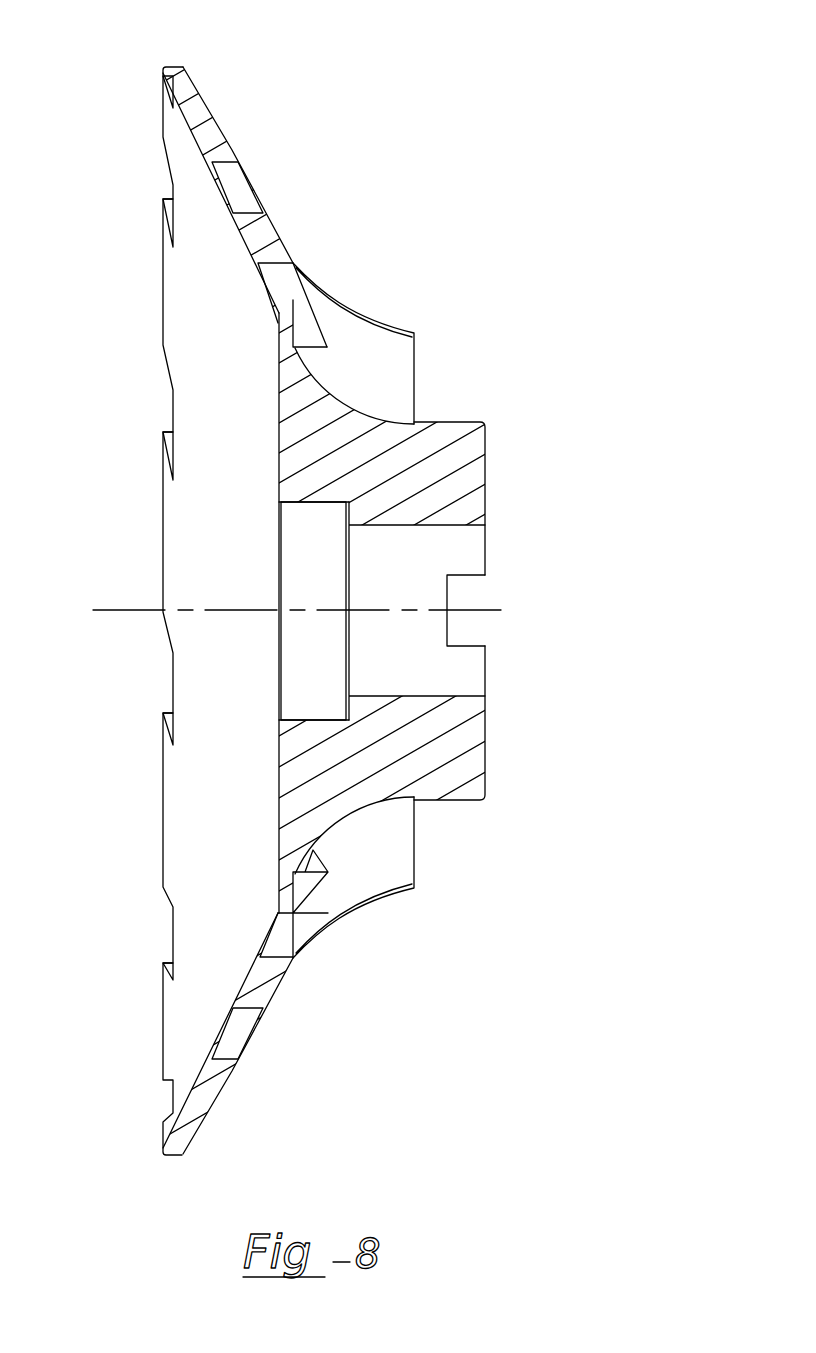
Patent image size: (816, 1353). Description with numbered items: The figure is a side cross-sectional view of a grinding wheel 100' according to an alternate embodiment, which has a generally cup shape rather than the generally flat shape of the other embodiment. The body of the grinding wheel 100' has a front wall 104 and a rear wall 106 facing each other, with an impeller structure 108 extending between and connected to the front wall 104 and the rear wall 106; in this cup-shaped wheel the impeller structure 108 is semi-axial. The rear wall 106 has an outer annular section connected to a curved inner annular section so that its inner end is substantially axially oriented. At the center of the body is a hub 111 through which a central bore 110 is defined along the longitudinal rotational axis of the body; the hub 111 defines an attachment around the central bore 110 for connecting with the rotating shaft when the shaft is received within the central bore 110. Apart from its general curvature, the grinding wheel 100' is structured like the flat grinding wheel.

The grinding wheel 100' is at (572, 108).
The front wall 104 is at (183, 127).
The rear wall 106 is at (386, 323).
The impeller structure 108 is at (262, 233).
The central bore 110 is at (455, 553).
The hub 111 is at (457, 460).